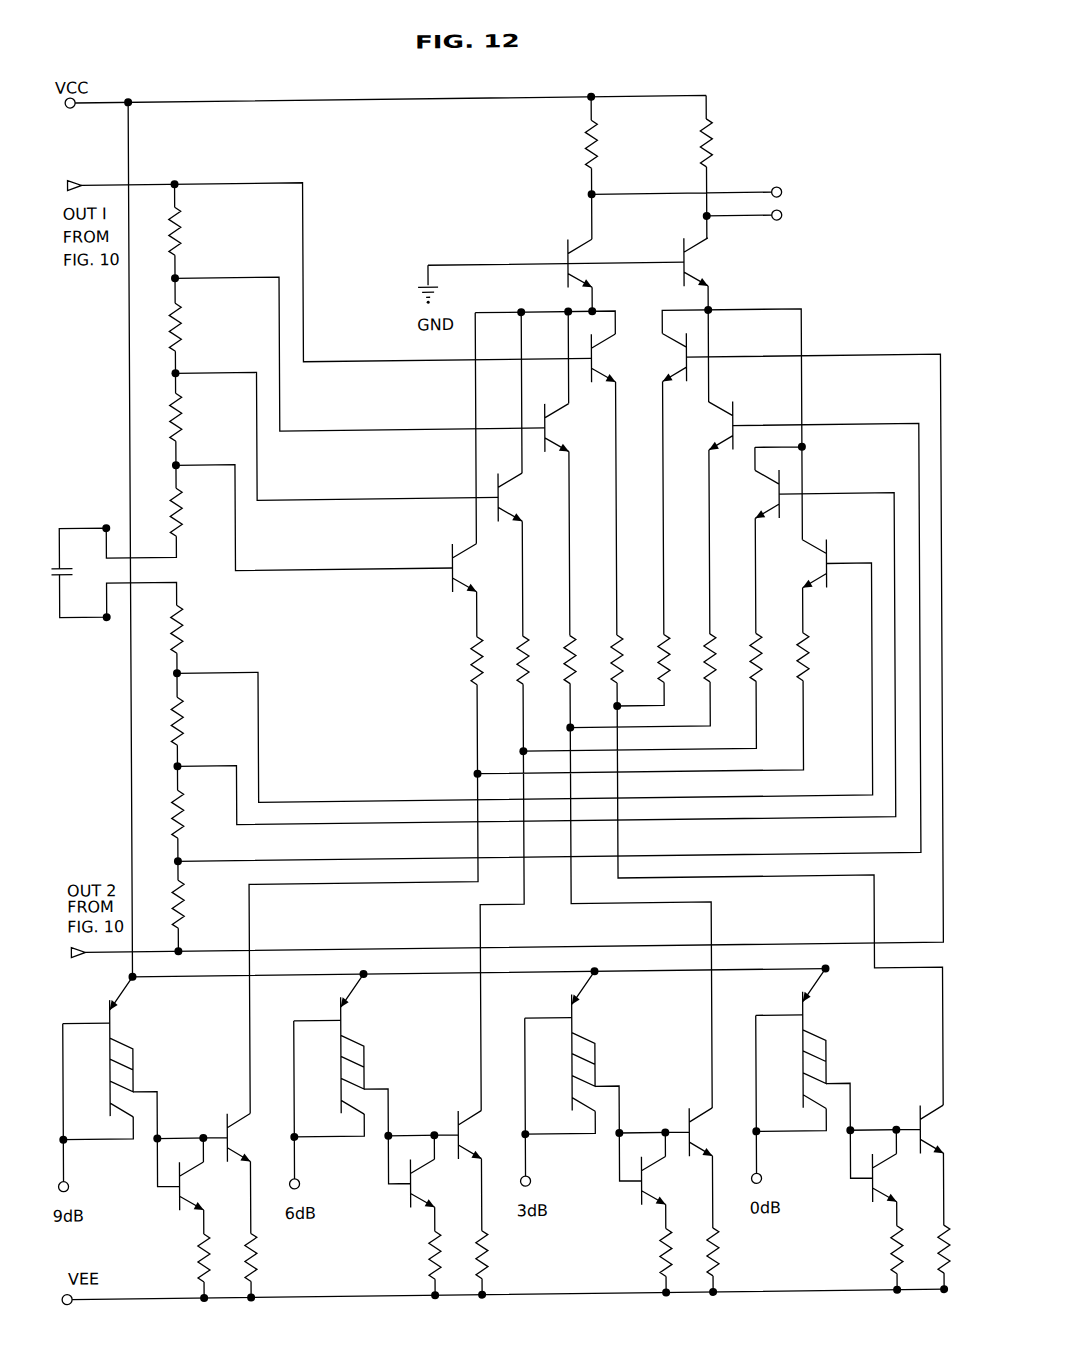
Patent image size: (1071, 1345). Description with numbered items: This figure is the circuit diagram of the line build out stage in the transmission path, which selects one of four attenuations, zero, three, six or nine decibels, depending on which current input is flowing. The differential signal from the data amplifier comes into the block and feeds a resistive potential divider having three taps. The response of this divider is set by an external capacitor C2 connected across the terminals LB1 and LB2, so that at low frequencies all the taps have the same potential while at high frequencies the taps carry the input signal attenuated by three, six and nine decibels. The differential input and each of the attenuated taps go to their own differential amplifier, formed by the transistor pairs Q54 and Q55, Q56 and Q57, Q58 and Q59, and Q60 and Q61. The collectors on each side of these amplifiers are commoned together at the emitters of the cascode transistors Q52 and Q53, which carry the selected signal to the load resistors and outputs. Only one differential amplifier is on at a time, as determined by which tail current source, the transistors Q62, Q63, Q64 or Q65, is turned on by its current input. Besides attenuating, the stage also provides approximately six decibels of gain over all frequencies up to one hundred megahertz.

The cascode transistor Q52 is at (600, 263).
The cascode transistor Q53 is at (715, 261).
The differential amplifier transistor Q54 is at (616, 358).
The differential amplifier transistor Q55 is at (665, 357).
The differential amplifier transistor Q56 is at (572, 427).
The differential amplifier transistor Q57 is at (712, 426).
The differential amplifier transistor Q58 is at (528, 497).
The differential amplifier transistor Q59 is at (752, 494).
The differential amplifier transistor Q60 is at (479, 567).
The differential amplifier transistor Q61 is at (800, 563).
The tail current transistor Q62 is at (835, 1038).
The tail current transistor Q63 is at (604, 1041).
The tail current transistor Q64 is at (373, 1044).
The tail current transistor Q65 is at (142, 1046).
The capacitor C2 is at (71, 584).
The terminal LB1 is at (95, 515).
The terminal LB2 is at (94, 628).